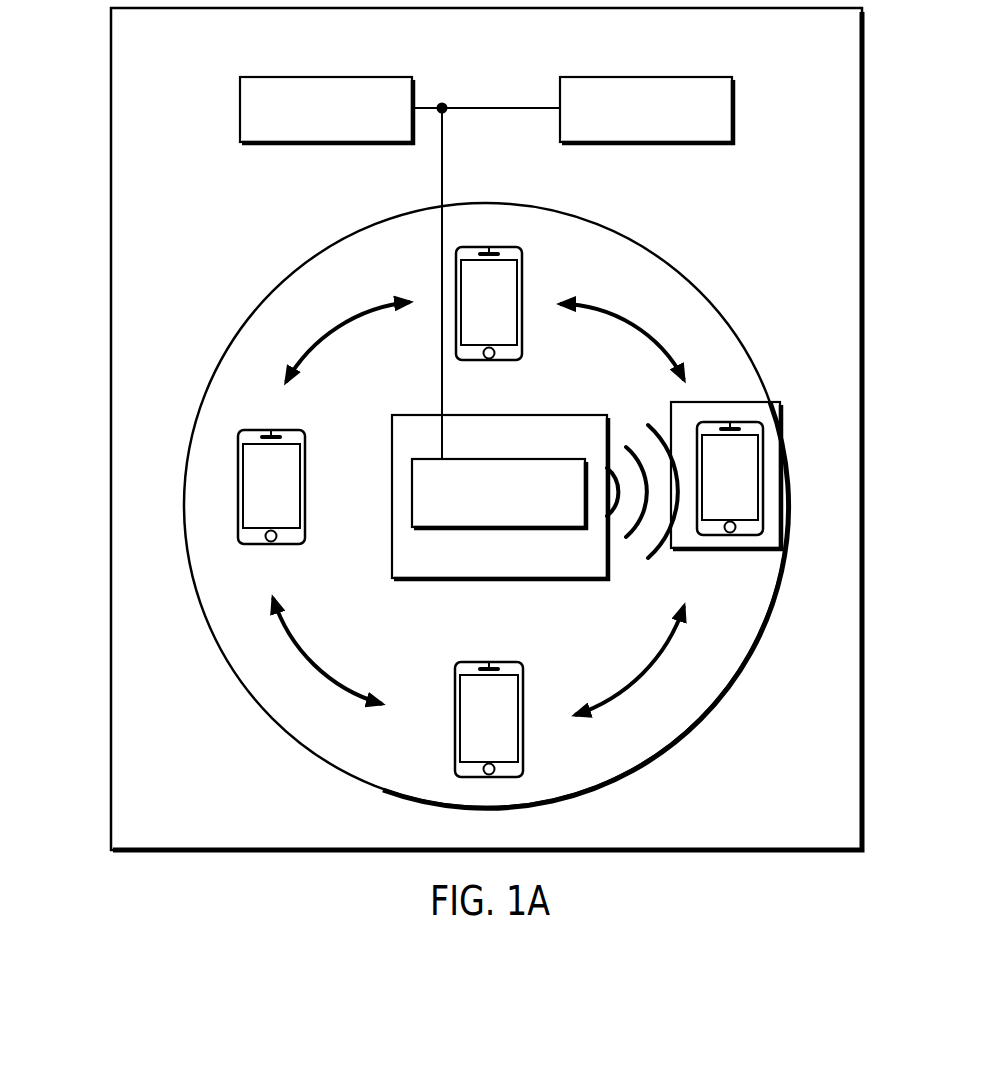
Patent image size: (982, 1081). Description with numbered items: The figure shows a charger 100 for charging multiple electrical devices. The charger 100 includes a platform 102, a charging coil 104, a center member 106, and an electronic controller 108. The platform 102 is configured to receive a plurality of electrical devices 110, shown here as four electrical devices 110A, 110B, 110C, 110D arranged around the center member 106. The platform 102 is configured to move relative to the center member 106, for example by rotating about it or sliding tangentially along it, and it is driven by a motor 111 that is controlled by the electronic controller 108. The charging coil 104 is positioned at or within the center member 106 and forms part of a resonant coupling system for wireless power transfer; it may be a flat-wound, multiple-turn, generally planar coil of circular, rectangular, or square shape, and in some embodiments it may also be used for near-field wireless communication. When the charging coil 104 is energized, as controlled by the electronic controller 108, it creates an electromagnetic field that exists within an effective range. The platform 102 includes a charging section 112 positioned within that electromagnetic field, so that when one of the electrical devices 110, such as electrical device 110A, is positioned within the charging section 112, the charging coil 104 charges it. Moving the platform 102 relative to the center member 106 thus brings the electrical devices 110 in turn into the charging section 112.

The charger 100 is at (111, 424).
The platform 102 is at (268, 292).
The charging coil 104 is at (412, 492).
The center member 106 is at (392, 530).
The electronic controller 108 is at (240, 108).
The plurality of electrical devices 110 is at (538, 278).
The electrical device 110A is at (720, 538).
The electrical device 110B is at (455, 750).
The electrical device 110C is at (272, 432).
The electrical device 110D is at (522, 332).
The motor 111 is at (732, 108).
The charging section 112 is at (770, 470).